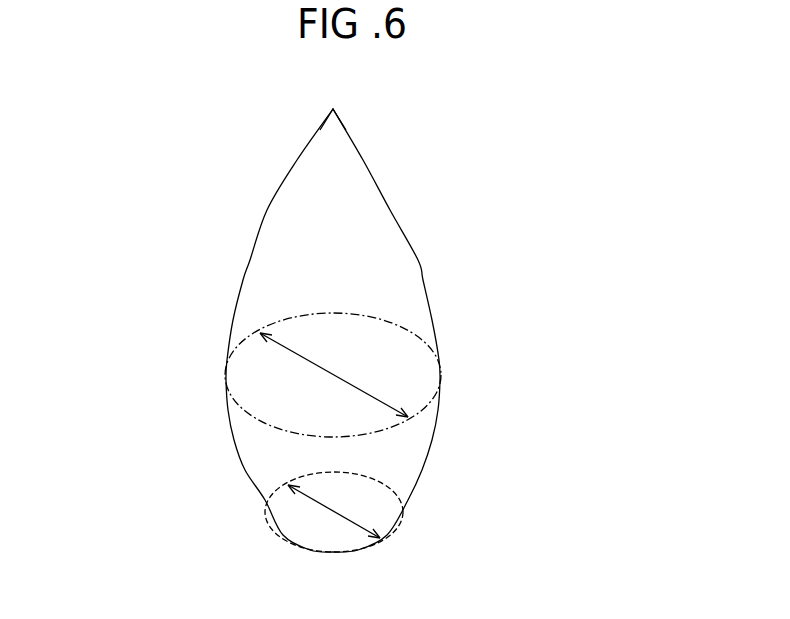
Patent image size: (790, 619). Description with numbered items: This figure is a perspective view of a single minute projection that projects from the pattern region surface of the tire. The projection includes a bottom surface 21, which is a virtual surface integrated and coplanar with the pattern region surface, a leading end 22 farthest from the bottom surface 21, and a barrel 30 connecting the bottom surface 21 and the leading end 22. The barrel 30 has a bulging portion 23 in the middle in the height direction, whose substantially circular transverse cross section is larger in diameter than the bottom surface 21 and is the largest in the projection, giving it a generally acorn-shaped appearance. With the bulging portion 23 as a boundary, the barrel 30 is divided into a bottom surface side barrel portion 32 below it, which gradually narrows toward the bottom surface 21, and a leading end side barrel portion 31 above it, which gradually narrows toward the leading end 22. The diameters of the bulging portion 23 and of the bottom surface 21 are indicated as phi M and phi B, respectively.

The leading end 22 is at (333, 109).
The bulging portion 23 is at (412, 332).
The bottom surface 21 is at (387, 482).
The barrel 30 is at (265, 330).
The leading end side barrel portion 31 is at (247, 328).
The bottom surface side barrel portion 32 is at (252, 452).